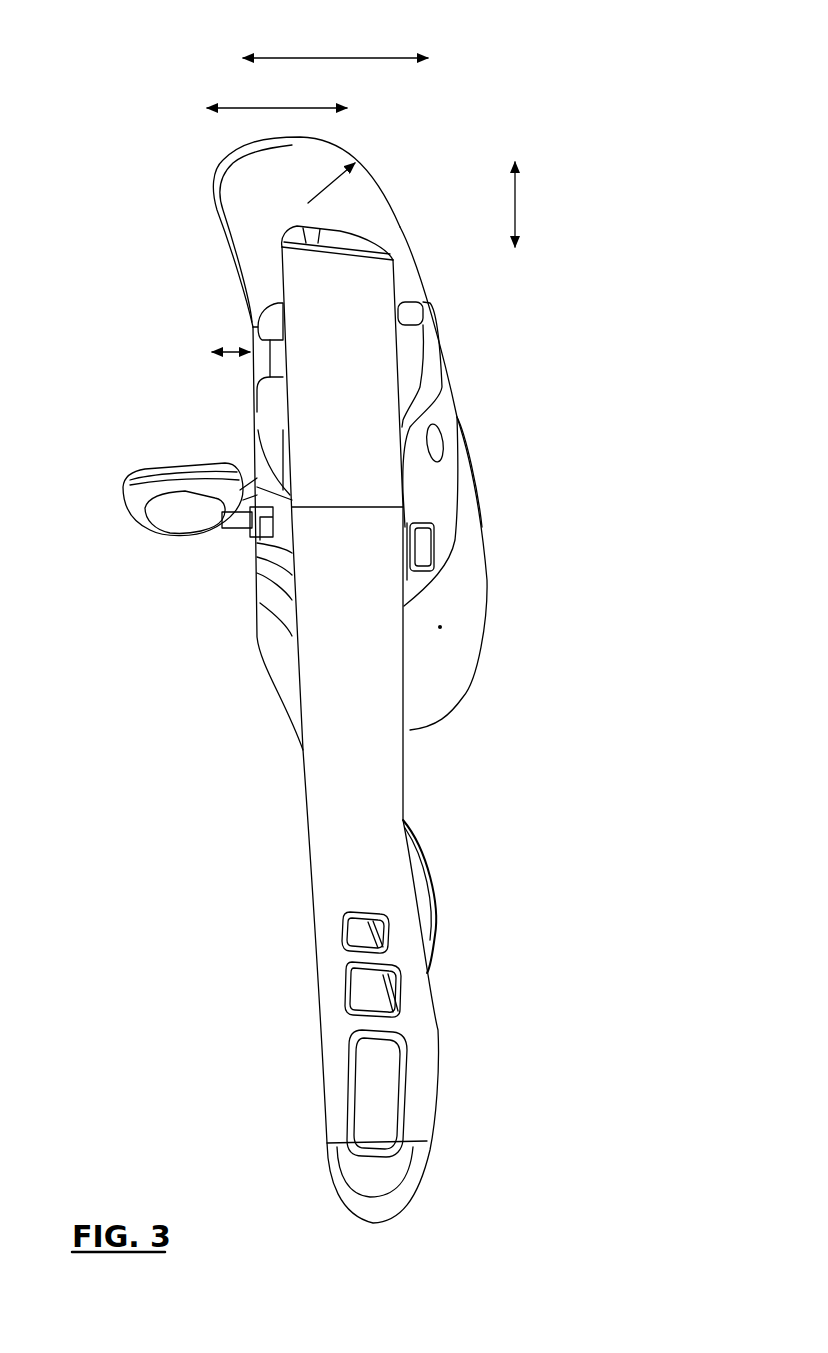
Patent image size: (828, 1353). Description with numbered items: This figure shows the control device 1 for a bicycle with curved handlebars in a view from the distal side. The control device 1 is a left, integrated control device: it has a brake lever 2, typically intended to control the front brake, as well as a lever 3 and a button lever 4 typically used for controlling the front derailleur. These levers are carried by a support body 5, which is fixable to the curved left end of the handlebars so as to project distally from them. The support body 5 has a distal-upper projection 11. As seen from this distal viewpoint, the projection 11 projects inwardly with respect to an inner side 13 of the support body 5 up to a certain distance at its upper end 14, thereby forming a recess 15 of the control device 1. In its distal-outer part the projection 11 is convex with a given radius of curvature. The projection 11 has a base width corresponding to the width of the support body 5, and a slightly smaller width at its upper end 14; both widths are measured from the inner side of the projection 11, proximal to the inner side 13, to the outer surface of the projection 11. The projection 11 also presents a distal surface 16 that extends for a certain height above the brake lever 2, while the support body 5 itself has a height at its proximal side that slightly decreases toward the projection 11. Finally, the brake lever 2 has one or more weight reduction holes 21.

The control device 1 is at (622, 213).
The brake lever 2 is at (460, 790).
The lever 3 is at (417, 912).
The button lever 4 is at (190, 523).
The support body 5 is at (488, 530).
The distal-upper projection 11 is at (187, 188).
The inner side 13 is at (252, 322).
The upper end 14 is at (250, 142).
The recess 15 is at (232, 385).
The distal surface 16 is at (345, 213).
The weight reduction holes 21 is at (360, 927).